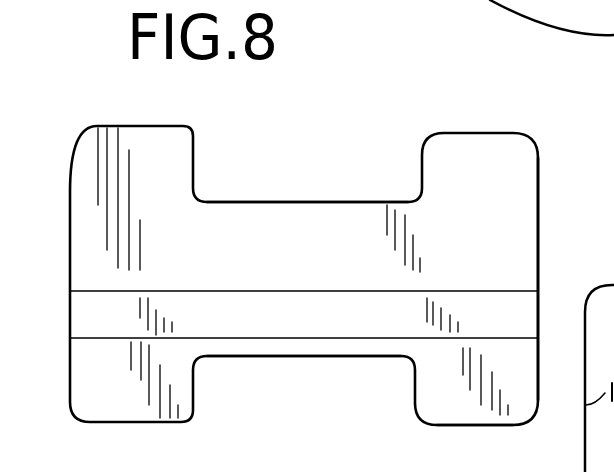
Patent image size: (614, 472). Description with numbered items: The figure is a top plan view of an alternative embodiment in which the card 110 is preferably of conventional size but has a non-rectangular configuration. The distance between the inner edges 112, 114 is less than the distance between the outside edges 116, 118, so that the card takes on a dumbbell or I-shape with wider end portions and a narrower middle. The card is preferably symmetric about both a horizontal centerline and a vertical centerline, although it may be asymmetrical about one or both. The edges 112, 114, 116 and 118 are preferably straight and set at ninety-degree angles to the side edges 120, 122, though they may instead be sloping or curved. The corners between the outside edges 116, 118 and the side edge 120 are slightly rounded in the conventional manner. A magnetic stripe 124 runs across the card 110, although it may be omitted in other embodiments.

The card 110 is at (303, 130).
The edge 112 is at (297, 202).
The edge 114 is at (283, 357).
The outside edge 116 is at (477, 133).
The outside edge 118 is at (463, 426).
The side edge 120 is at (538, 198).
The side edge 122 is at (70, 192).
The magnetic stripe 124 is at (230, 291).